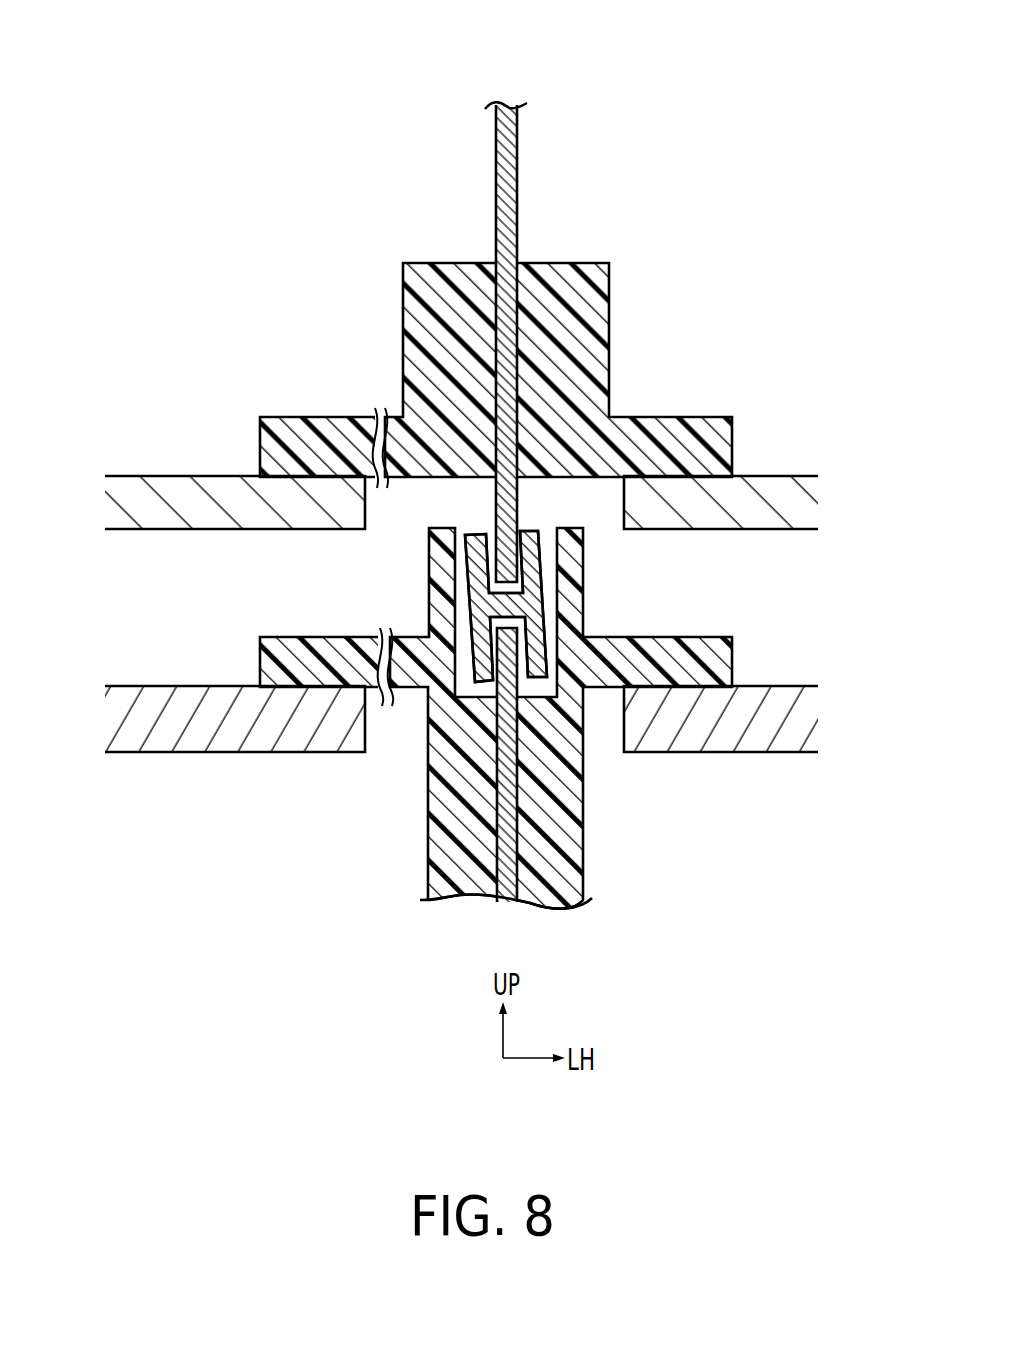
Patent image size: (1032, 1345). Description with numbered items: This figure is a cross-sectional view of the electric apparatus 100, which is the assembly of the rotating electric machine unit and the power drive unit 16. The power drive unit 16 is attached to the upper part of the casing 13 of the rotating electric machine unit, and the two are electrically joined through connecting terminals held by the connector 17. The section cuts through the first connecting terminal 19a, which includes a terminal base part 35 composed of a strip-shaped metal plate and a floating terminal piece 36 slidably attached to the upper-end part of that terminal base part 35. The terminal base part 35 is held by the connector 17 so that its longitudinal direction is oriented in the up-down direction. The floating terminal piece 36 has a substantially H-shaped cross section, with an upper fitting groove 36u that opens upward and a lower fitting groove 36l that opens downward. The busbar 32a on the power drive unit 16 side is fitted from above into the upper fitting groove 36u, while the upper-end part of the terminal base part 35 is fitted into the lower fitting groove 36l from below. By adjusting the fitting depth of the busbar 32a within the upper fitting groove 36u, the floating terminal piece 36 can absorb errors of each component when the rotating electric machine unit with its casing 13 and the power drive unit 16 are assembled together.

The electric apparatus 100 is at (473, 467).
The busbar 32a is at (508, 166).
The connector 17 is at (664, 619).
The power drive unit 16 is at (788, 532).
The upper fitting groove 36u is at (508, 586).
The floating terminal piece 36 is at (473, 588).
The casing 13 is at (147, 684).
The lower fitting groove 36l is at (498, 644).
The terminal base part 35 is at (507, 787).
The first connecting terminal 19a is at (530, 771).